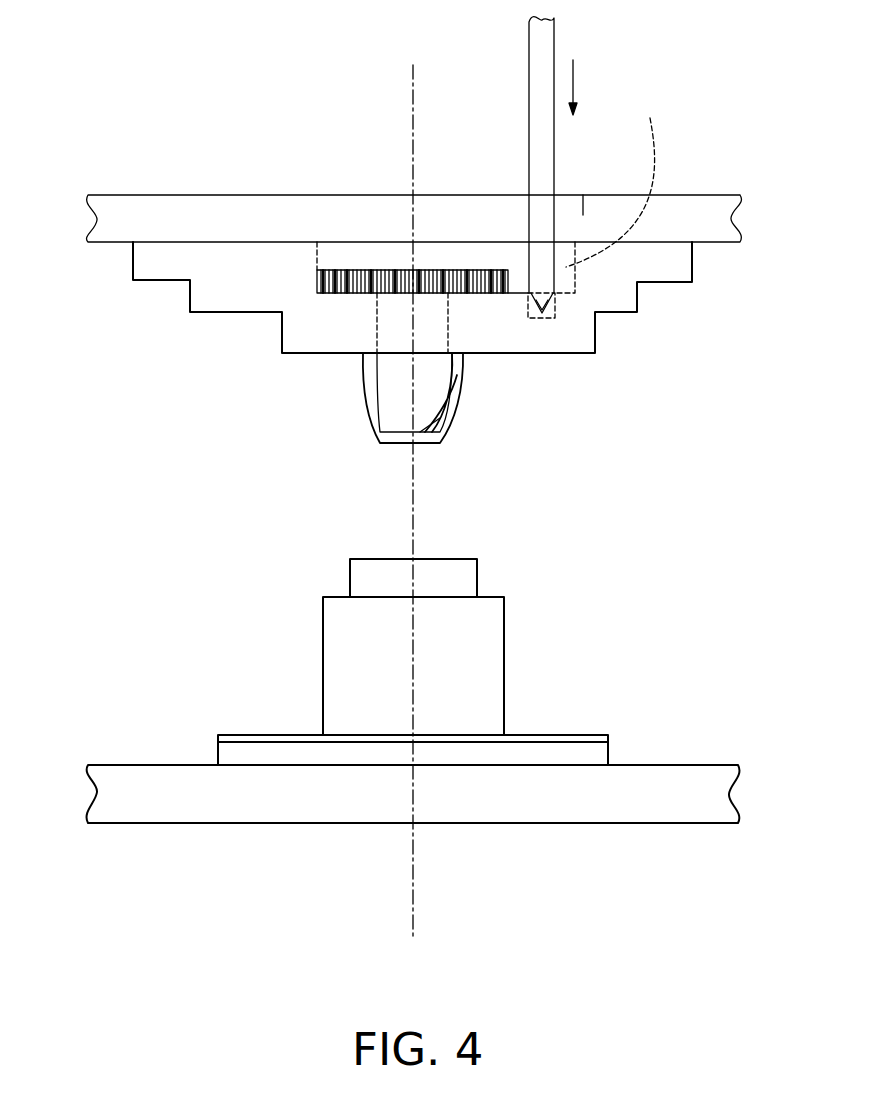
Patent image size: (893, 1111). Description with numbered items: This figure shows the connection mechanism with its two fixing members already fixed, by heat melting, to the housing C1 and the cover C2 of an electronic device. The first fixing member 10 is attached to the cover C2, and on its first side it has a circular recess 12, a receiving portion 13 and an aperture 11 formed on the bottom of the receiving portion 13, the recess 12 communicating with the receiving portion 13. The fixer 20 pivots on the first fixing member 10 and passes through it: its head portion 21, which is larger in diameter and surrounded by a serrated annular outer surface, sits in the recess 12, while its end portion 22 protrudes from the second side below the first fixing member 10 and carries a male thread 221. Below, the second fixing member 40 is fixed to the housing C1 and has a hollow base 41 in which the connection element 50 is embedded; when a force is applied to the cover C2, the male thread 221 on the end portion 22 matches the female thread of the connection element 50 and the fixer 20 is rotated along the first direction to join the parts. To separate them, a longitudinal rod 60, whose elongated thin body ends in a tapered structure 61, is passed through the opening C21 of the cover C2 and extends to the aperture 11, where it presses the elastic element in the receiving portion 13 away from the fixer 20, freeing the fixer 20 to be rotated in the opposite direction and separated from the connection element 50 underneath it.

The first fixing member 10 is at (664, 286).
The aperture 11 is at (540, 320).
The circular recess 12 is at (332, 256).
The receiving portion 13 is at (616, 177).
The fixer 20 is at (412, 370).
The head portion 21 is at (349, 275).
The end portion 22 is at (393, 383).
The male thread 221 is at (465, 380).
The second fixing member 40 is at (584, 736).
The base 41 is at (323, 663).
The connection element 50 is at (478, 572).
The rod 60 is at (528, 22).
The tapered structure 61 is at (548, 306).
The housing C1 is at (672, 828).
The cover C2 is at (163, 195).
The opening C21 is at (583, 195).